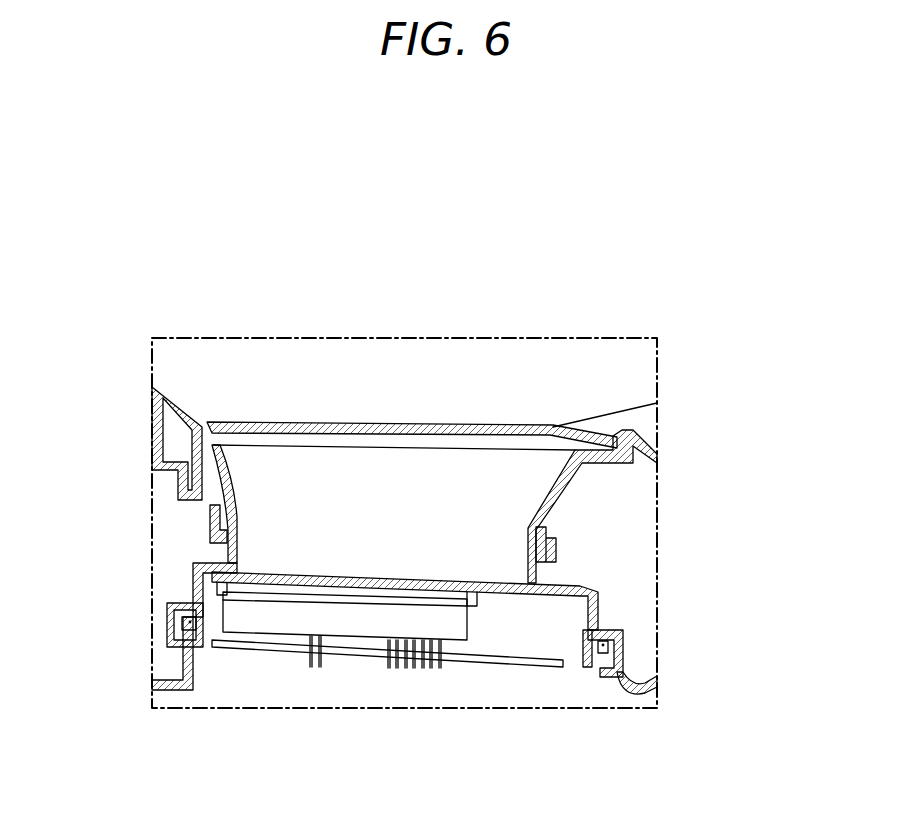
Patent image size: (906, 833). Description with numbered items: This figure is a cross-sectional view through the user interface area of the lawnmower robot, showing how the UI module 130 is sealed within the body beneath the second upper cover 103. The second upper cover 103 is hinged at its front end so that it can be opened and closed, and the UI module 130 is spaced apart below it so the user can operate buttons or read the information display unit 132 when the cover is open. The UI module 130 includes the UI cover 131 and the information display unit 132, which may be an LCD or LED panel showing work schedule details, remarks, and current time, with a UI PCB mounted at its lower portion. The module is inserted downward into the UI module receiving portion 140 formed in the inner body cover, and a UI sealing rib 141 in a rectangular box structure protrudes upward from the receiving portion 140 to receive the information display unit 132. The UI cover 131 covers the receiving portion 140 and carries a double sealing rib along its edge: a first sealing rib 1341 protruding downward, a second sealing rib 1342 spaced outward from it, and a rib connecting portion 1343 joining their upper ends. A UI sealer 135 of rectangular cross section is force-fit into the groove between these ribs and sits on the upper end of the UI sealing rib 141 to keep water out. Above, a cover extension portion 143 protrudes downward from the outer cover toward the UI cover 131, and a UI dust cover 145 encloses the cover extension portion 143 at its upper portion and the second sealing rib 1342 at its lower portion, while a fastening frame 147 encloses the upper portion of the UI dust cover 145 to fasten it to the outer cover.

The second upper cover 103 is at (363, 422).
The UI module 130 is at (405, 530).
The UI cover 131 is at (290, 572).
The information display unit 132 is at (358, 625).
The UI sealer 135 is at (182, 620).
The UI module receiving portion 140 is at (233, 663).
The UI sealing rib 141 is at (183, 662).
The cover extension portion 143 is at (548, 500).
The UI dust cover 145 is at (195, 586).
The fastening frame 147 is at (240, 526).
The first sealing rib 1341 is at (572, 668).
The second sealing rib 1342 is at (608, 648).
The rib connecting portion 1343 is at (620, 632).